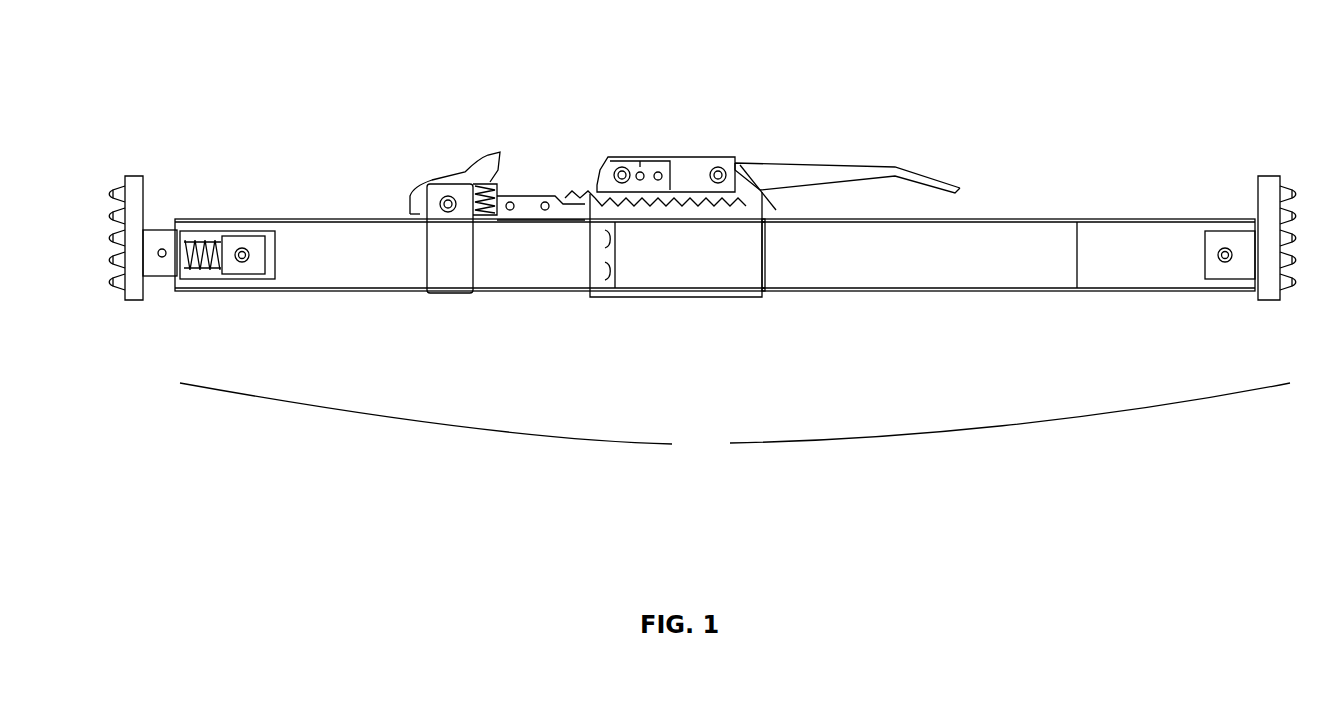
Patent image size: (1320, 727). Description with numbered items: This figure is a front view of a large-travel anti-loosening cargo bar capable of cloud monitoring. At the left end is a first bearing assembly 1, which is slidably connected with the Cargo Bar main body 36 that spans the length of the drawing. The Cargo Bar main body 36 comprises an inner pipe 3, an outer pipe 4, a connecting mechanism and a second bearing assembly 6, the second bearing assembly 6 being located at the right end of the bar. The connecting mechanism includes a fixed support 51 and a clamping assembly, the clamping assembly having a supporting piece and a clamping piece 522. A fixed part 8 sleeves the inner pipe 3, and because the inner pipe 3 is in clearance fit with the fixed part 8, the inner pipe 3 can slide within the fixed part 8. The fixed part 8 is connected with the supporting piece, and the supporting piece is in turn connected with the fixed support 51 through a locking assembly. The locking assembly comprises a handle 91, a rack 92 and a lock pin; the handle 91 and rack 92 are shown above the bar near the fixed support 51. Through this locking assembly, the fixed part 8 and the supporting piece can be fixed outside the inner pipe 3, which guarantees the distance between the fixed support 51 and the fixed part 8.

The first bearing assembly 1 is at (123, 170).
The inner pipe 3 is at (345, 266).
The outer pipe 4 is at (1112, 268).
The second bearing assembly 6 is at (1275, 172).
The fixed part 8 is at (457, 255).
The fixed support 51 is at (598, 297).
The clamping piece 522 is at (470, 180).
The handle 91 is at (797, 178).
The rack 92 is at (573, 195).
The Cargo Bar main body 36 is at (735, 420).